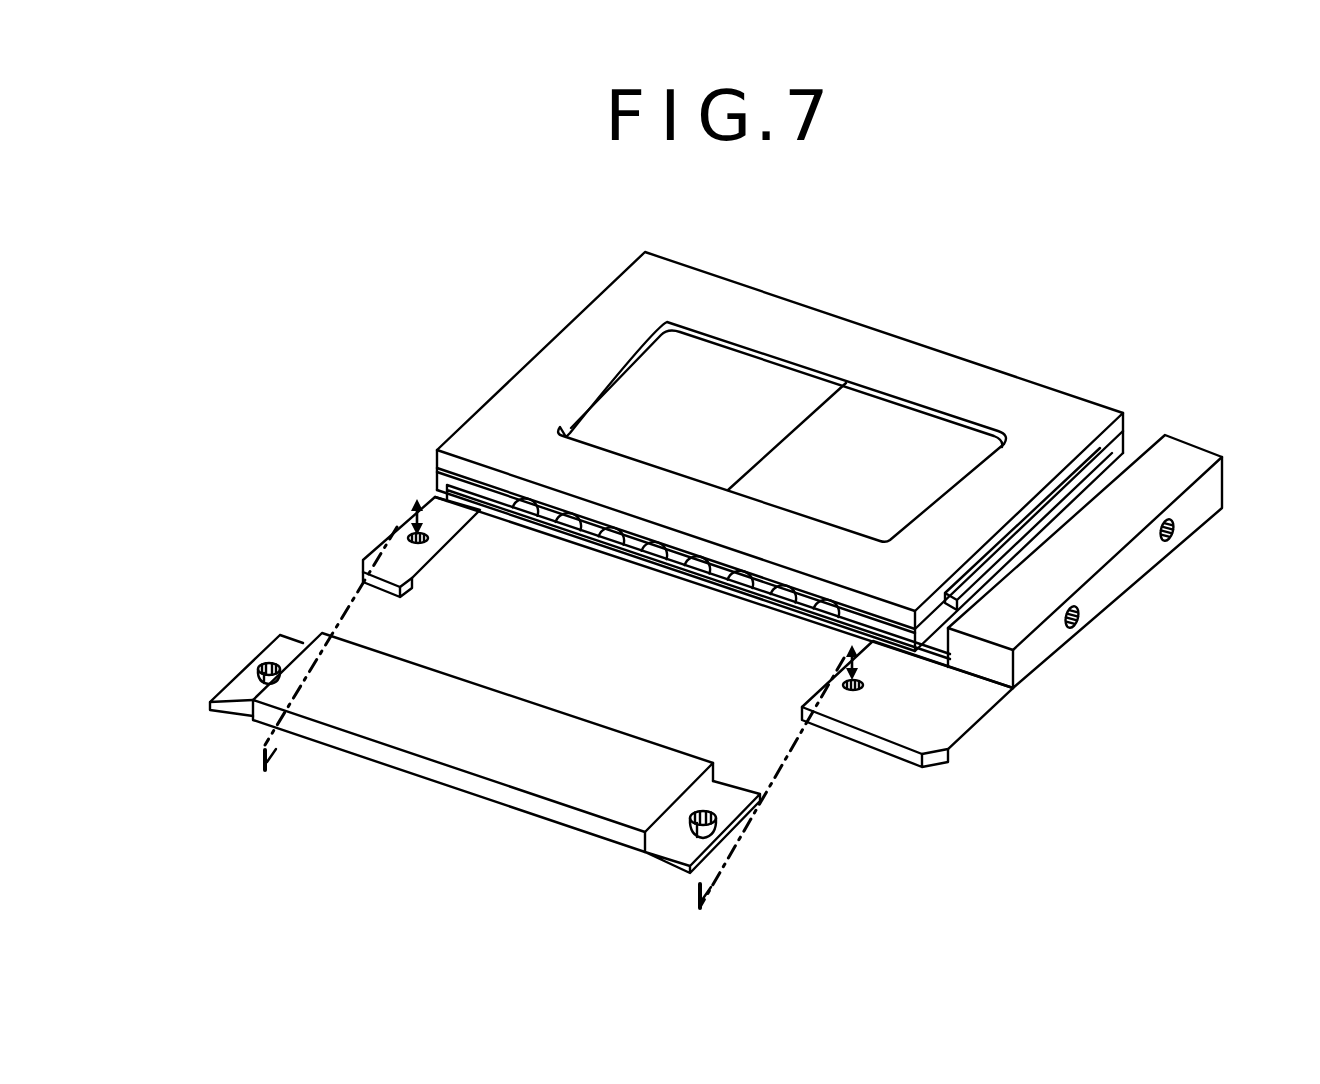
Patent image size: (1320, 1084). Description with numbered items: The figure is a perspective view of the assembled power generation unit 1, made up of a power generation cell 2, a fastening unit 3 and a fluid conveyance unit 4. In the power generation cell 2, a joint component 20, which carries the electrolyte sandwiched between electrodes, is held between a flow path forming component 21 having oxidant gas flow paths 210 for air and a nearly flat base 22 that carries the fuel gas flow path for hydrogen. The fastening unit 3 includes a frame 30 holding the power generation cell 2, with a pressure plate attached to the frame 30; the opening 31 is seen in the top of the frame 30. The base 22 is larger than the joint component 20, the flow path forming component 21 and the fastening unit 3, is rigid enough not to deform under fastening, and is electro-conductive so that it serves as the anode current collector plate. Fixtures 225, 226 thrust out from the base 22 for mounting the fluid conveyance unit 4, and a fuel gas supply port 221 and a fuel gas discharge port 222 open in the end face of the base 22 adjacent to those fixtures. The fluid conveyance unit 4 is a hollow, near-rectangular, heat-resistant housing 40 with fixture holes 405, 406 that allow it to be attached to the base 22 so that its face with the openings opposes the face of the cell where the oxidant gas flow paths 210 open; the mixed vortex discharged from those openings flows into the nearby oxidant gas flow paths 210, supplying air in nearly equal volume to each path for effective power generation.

The power generation unit 1 is at (1151, 298).
The power generation cell 2 is at (350, 371).
The fastening unit 3 is at (1026, 280).
The fluid conveyance unit 4 is at (539, 836).
The joint component 20 is at (434, 490).
The flow path forming component 21 is at (436, 474).
The base 22 is at (777, 671).
The frame 30 is at (734, 315).
The opening 31 is at (952, 442).
The housing 40 is at (423, 723).
The oxidant gas flow paths 210 is at (525, 507).
The fuel gas supply port 221 is at (1172, 536).
The fuel gas discharge port 222 is at (1076, 626).
The fixture 225 is at (376, 560).
The fixture 226 is at (948, 723).
The fixture hole 405 is at (242, 696).
The fixture hole 406 is at (717, 821).